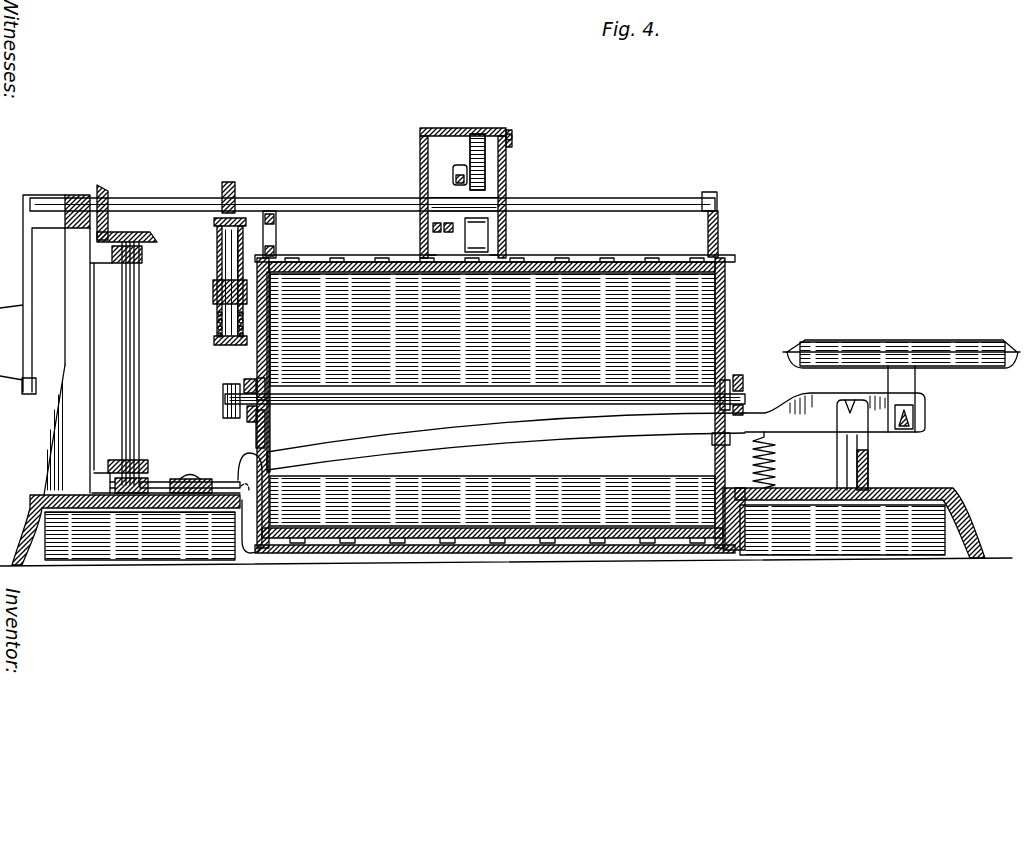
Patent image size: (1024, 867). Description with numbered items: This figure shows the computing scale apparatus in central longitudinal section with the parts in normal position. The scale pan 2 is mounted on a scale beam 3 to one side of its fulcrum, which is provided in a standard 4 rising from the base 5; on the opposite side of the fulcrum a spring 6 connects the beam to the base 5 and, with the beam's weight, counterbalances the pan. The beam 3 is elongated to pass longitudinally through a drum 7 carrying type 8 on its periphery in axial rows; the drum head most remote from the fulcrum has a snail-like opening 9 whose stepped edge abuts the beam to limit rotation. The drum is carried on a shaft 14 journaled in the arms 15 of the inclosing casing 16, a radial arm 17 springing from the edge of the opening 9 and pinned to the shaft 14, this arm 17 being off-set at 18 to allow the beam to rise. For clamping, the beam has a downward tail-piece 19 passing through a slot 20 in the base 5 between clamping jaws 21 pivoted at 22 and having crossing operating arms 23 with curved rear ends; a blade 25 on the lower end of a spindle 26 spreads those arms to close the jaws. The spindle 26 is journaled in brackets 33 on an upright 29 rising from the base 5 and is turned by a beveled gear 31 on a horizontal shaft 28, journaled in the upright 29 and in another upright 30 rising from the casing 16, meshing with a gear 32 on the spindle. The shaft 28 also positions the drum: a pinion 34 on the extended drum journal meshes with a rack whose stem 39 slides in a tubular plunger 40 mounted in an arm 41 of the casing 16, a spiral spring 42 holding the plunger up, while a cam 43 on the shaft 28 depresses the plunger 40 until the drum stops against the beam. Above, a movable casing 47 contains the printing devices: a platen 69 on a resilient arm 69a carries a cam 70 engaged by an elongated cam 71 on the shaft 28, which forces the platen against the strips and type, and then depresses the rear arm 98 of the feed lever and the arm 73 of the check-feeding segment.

The scale pan 2 is at (928, 338).
The scale beam 3 is at (495, 440).
The standard 4 is at (870, 455).
The base 5 is at (30, 520).
The spring 6 is at (776, 462).
The drum 7 is at (726, 290).
The type 8 is at (610, 258).
The opening 9 is at (271, 356).
The shaft 14 is at (362, 394).
The arms 15 is at (246, 380).
The casing 16 is at (735, 258).
The radial arm 17 is at (272, 390).
The off-set 18 is at (270, 432).
The tail-piece 19 is at (244, 550).
The slot 20 is at (230, 505).
The clamping jaws 21 is at (222, 482).
The pivot 22 is at (190, 476).
The operating arms 23 is at (100, 510).
The blade 25 is at (148, 494).
The spindle 26 is at (140, 384).
The horizontal shaft 28 is at (170, 198).
The upright 29 is at (84, 353).
The upright 30 is at (718, 220).
The beveled gear 31 is at (103, 188).
The gear 32 is at (158, 240).
The brackets 33 is at (107, 263).
The pinion 34 is at (223, 404).
The stem 39 is at (216, 313).
The tubular plunger 40 is at (217, 268).
The arm 41 is at (213, 292).
The spiral spring 42 is at (218, 330).
The cam 43 is at (230, 182).
The casing 47 is at (458, 128).
The platen 69 is at (470, 248).
The resilient arm 69a is at (505, 150).
The cam 70 is at (490, 229).
The cam 71 is at (506, 185).
The arm 73 is at (425, 205).
The rear arm 98 is at (432, 229).